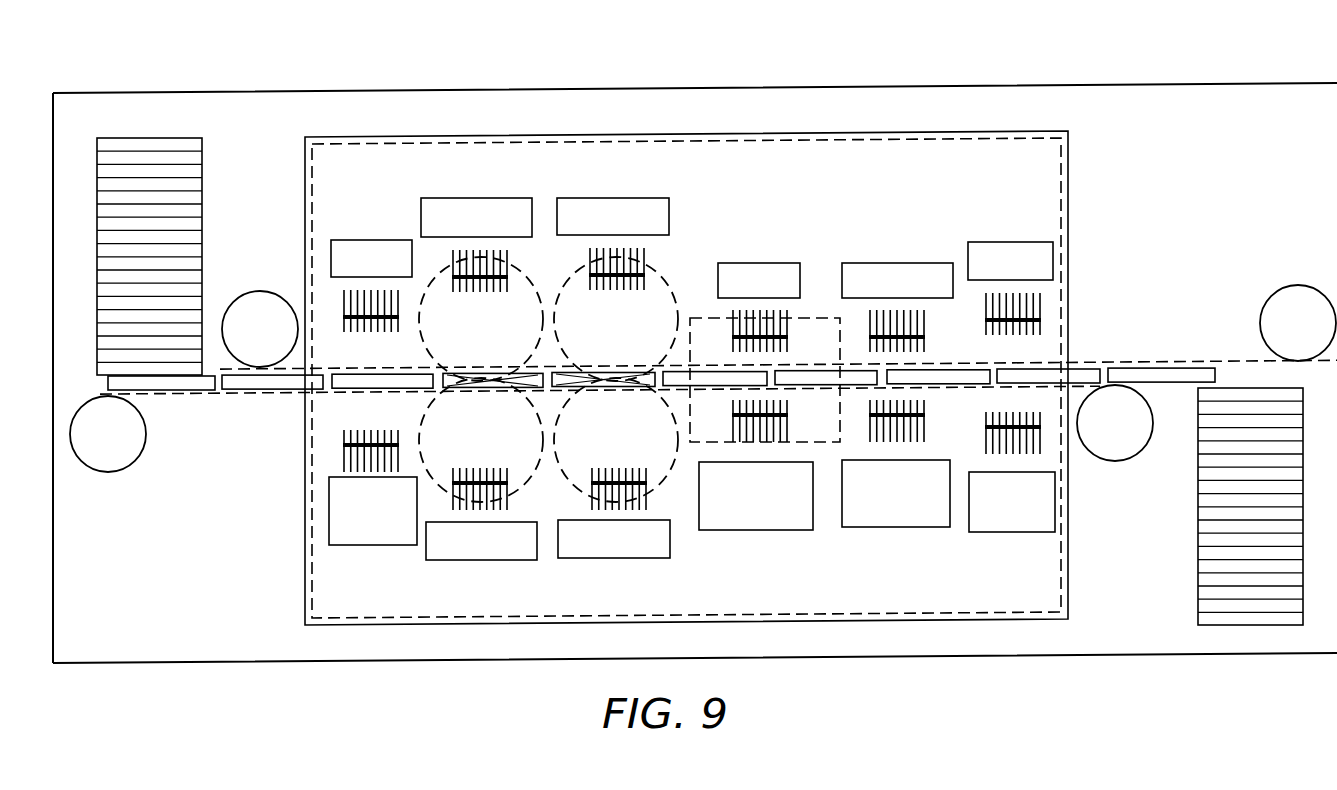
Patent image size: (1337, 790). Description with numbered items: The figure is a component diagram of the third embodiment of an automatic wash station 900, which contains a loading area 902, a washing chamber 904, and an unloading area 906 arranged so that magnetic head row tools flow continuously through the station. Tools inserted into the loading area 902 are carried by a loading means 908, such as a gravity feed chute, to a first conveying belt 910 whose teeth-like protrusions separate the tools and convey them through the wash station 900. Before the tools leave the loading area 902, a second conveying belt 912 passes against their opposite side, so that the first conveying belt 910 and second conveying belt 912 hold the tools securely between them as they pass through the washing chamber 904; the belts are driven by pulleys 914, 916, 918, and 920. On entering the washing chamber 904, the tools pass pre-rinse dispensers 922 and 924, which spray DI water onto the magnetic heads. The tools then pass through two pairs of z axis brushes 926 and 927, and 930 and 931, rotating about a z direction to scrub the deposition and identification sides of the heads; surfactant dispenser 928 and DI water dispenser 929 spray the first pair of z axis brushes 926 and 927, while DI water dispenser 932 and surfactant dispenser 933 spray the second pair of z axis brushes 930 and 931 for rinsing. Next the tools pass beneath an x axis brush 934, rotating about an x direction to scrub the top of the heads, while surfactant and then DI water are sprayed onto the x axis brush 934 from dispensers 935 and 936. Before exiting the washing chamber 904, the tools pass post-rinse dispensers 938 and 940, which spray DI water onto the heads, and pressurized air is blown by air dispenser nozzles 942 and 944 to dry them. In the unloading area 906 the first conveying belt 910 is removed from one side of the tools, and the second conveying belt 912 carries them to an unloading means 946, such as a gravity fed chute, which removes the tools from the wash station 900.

The automatic wash station 900 is at (397, 662).
The loading area 902 is at (298, 120).
The washing chamber 904 is at (690, 134).
The unloading area 906 is at (1236, 108).
The loading means 908 is at (203, 228).
The first conveying belt 910 is at (168, 396).
The second conveying belt 912 is at (297, 372).
The pulley 914 is at (112, 472).
The pulley 916 is at (270, 292).
The pulley 918 is at (1290, 287).
The pulley 920 is at (1107, 461).
The pre-rinse dispenser 922 is at (362, 546).
The pre-rinse dispenser 924 is at (358, 240).
The z axis brush 926 is at (427, 426).
The z axis brush 927 is at (430, 350).
The surfactant dispenser 928 is at (487, 560).
The DI water dispenser 929 is at (480, 198).
The z axis brush 930 is at (672, 486).
The z axis brush 931 is at (665, 276).
The DI water dispenser 932 is at (616, 558).
The surfactant dispenser 933 is at (637, 198).
The x axis brush 934 is at (810, 325).
The dispenser 935 is at (752, 531).
The dispenser 936 is at (760, 263).
The post-rinse dispenser 938 is at (896, 527).
The post-rinse dispenser 940 is at (893, 263).
The air dispenser nozzle 942 is at (1005, 532).
The air dispenser nozzle 944 is at (1028, 242).
The unloading means 946 is at (1198, 582).